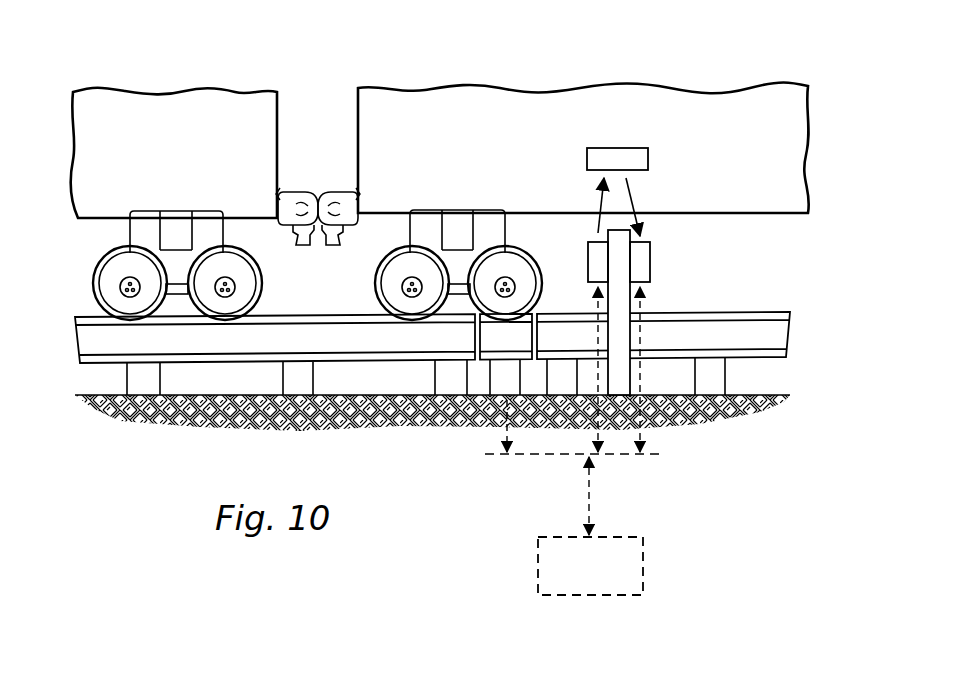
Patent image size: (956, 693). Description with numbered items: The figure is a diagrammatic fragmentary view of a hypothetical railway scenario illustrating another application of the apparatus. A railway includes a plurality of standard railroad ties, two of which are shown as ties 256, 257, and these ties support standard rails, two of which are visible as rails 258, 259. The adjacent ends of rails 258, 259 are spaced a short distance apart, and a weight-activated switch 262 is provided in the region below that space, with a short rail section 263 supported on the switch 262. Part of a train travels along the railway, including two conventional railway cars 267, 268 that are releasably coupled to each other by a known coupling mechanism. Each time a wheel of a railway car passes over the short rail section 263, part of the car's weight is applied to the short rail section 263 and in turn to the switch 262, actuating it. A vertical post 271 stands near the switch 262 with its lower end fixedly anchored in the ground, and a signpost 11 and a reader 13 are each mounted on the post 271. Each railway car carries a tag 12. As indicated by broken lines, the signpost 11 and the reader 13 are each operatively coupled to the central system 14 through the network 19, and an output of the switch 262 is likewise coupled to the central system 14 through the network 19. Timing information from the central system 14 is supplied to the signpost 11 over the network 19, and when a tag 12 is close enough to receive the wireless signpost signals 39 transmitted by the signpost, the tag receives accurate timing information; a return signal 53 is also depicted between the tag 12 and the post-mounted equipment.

The railway car 267 is at (119, 90).
The railway car 268 is at (693, 88).
The tag 12 is at (613, 147).
The signpost signals 39 is at (600, 202).
The response signal 53 is at (636, 203).
The signpost 11 is at (587, 257).
The vertical post 271 is at (652, 252).
The reader 13 is at (652, 266).
The rail 258 is at (75, 340).
The short rail section 263 is at (484, 333).
The rail 259 is at (790, 338).
The railroad tie 256 is at (127, 377).
The weight-activated switch 262 is at (497, 376).
The railroad tie 257 is at (728, 370).
The network 19 is at (570, 456).
The central system 14 is at (644, 574).